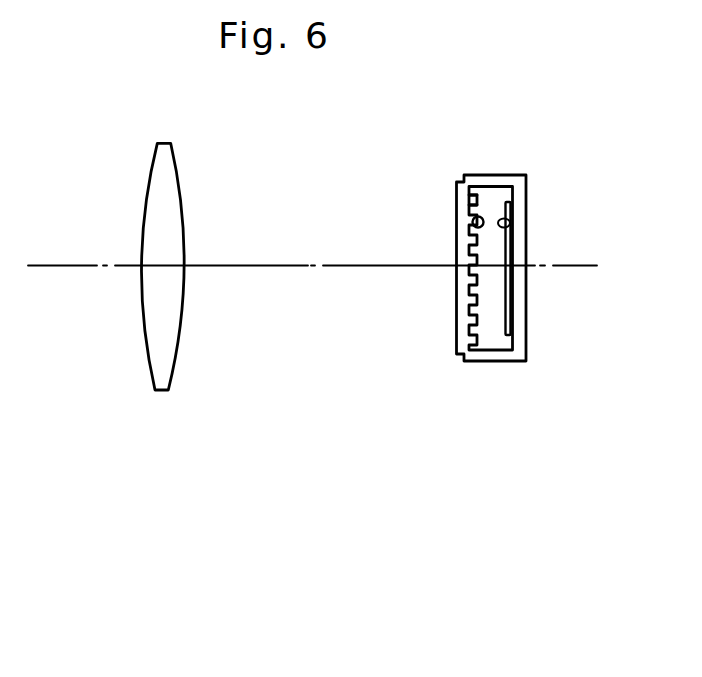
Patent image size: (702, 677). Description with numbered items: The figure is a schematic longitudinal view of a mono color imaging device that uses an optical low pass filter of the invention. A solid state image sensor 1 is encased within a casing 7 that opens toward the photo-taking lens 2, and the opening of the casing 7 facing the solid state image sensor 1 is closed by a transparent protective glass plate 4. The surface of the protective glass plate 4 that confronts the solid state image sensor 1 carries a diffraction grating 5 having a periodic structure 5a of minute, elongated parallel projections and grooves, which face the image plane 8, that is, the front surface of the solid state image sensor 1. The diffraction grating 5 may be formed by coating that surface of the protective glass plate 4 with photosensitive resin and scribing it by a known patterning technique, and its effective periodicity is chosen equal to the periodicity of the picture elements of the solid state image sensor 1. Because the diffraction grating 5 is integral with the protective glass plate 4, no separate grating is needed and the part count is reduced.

The solid state image sensor 1 is at (513, 282).
The photo-taking lens 2 is at (155, 371).
The transparent protective glass plate 4 is at (462, 308).
The diffraction grating 5 is at (477, 206).
The periodic structure 5a is at (470, 232).
The casing 7 is at (527, 181).
The image plane 8 is at (510, 222).